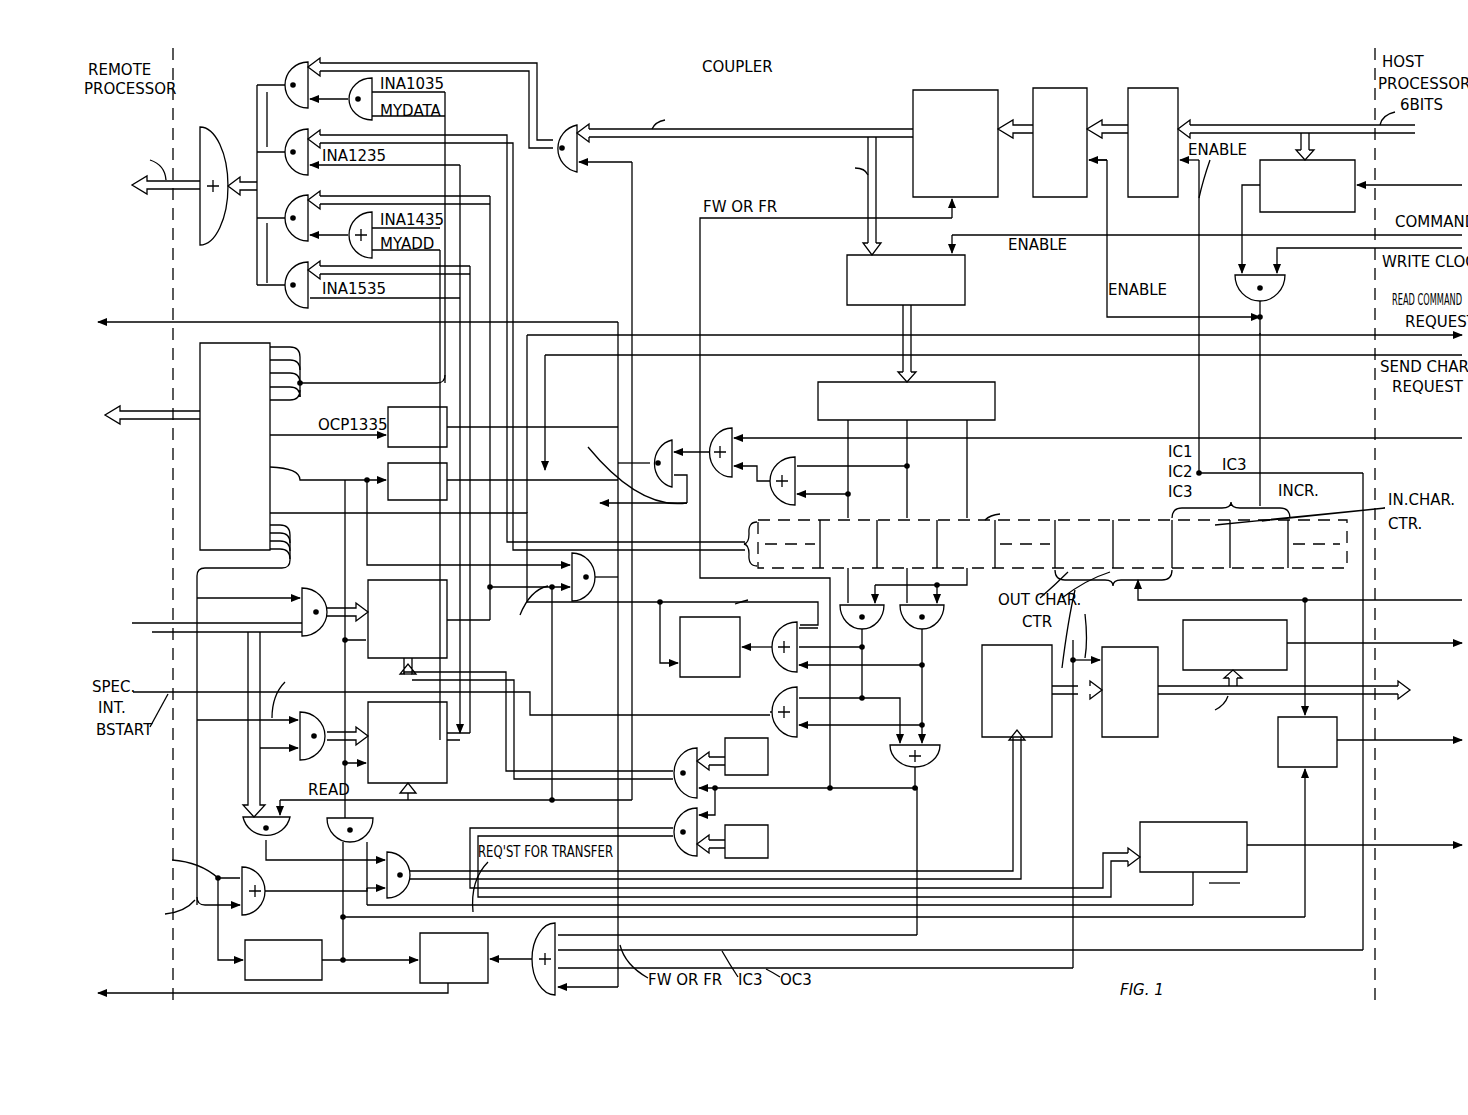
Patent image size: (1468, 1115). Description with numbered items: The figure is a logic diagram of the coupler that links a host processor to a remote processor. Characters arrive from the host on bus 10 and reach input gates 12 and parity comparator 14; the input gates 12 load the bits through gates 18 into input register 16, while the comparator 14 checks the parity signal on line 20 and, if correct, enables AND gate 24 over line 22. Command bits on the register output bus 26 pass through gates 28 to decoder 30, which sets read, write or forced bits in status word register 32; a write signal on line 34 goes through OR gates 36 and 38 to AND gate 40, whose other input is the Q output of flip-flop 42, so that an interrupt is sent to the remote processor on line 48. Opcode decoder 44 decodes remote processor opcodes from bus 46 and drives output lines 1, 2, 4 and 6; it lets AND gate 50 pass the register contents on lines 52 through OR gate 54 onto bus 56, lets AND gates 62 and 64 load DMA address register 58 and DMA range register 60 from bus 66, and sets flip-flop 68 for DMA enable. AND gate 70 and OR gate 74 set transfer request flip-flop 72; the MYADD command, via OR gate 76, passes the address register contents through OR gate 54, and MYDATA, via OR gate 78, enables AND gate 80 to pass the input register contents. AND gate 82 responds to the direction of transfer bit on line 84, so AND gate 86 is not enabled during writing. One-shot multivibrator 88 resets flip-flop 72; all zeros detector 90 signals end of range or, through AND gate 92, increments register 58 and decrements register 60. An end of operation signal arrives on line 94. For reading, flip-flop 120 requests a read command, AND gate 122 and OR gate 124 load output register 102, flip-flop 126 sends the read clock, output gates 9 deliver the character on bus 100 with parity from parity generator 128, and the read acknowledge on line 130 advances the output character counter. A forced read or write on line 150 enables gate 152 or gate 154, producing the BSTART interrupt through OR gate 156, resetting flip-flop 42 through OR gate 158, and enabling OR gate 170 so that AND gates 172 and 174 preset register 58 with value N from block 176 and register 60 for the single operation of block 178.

The opcode decoder output line OCP1435 1 is at (329, 464).
The opcode decoder output line 2 is at (306, 513).
The opcode decoder output lines 4 is at (290, 560).
The opcode decoder output bundle 6 is at (342, 383).
The output gates 9 is at (1140, 647).
The bus 10 is at (1324, 125).
The input gates 12 is at (1128, 114).
The parity comparator 14 is at (1335, 160).
The input register 16 is at (913, 122).
The gates 18 is at (1033, 115).
The line 20 is at (1388, 185).
The line 22 is at (1242, 251).
The AND gate 24 is at (1275, 275).
The bus 26 is at (770, 129).
The gates 28 is at (965, 280).
The decoder 30 is at (995, 392).
The status word register 32 is at (754, 520).
The line 34 is at (907, 452).
The OR gate 36 is at (782, 458).
The OR gate 38 is at (722, 428).
The AND gate 40 is at (660, 440).
The flip-flop 42 is at (740, 668).
The opcode decoder 44 is at (200, 360).
The bus 46 is at (166, 415).
The line 48 is at (350, 641).
The AND gate 50 is at (295, 130).
The lines 52 is at (355, 132).
The OR gate 54 is at (205, 127).
The bus 56 is at (180, 178).
The DMA address register 58 is at (447, 640).
The DMA range register 60 is at (447, 757).
The AND gate 62 is at (315, 590).
The AND gate 64 is at (314, 716).
The bus 66 is at (166, 632).
The flip-flop 68 is at (385, 467).
The AND gate 70 is at (582, 553).
The flip-flop 72 is at (492, 968).
The OR gate 74 is at (295, 197).
The OR gate 76 is at (348, 222).
The OR gate 78 is at (350, 86).
The AND gate 80 is at (290, 68).
The AND gate 82 is at (567, 125).
The line 84 is at (552, 660).
The AND gate 86 is at (243, 830).
The one-shot multivibrator 88 is at (290, 940).
The all zeros detector 90 is at (1245, 822).
The AND gate 92 is at (335, 835).
The line 94 is at (1350, 438).
The bus 100 is at (1320, 686).
The output register 102 is at (982, 690).
The flip-flop 120 is at (402, 407).
The AND gate 122 is at (410, 859).
The OR gate 124 is at (265, 904).
The flip-flop 126 is at (1278, 737).
The parity generator circuit 128 is at (1250, 620).
The line 130 is at (1386, 600).
The line 150 is at (967, 452).
The AND gate 152 is at (928, 624).
The AND gate 154 is at (944, 612).
The OR gate 156 is at (780, 692).
The OR gate 158 is at (778, 626).
The OR gate 170 is at (937, 745).
The AND gate 172 is at (680, 750).
The AND gate 174 is at (676, 823).
The block 176 is at (768, 760).
The block 178 is at (772, 836).